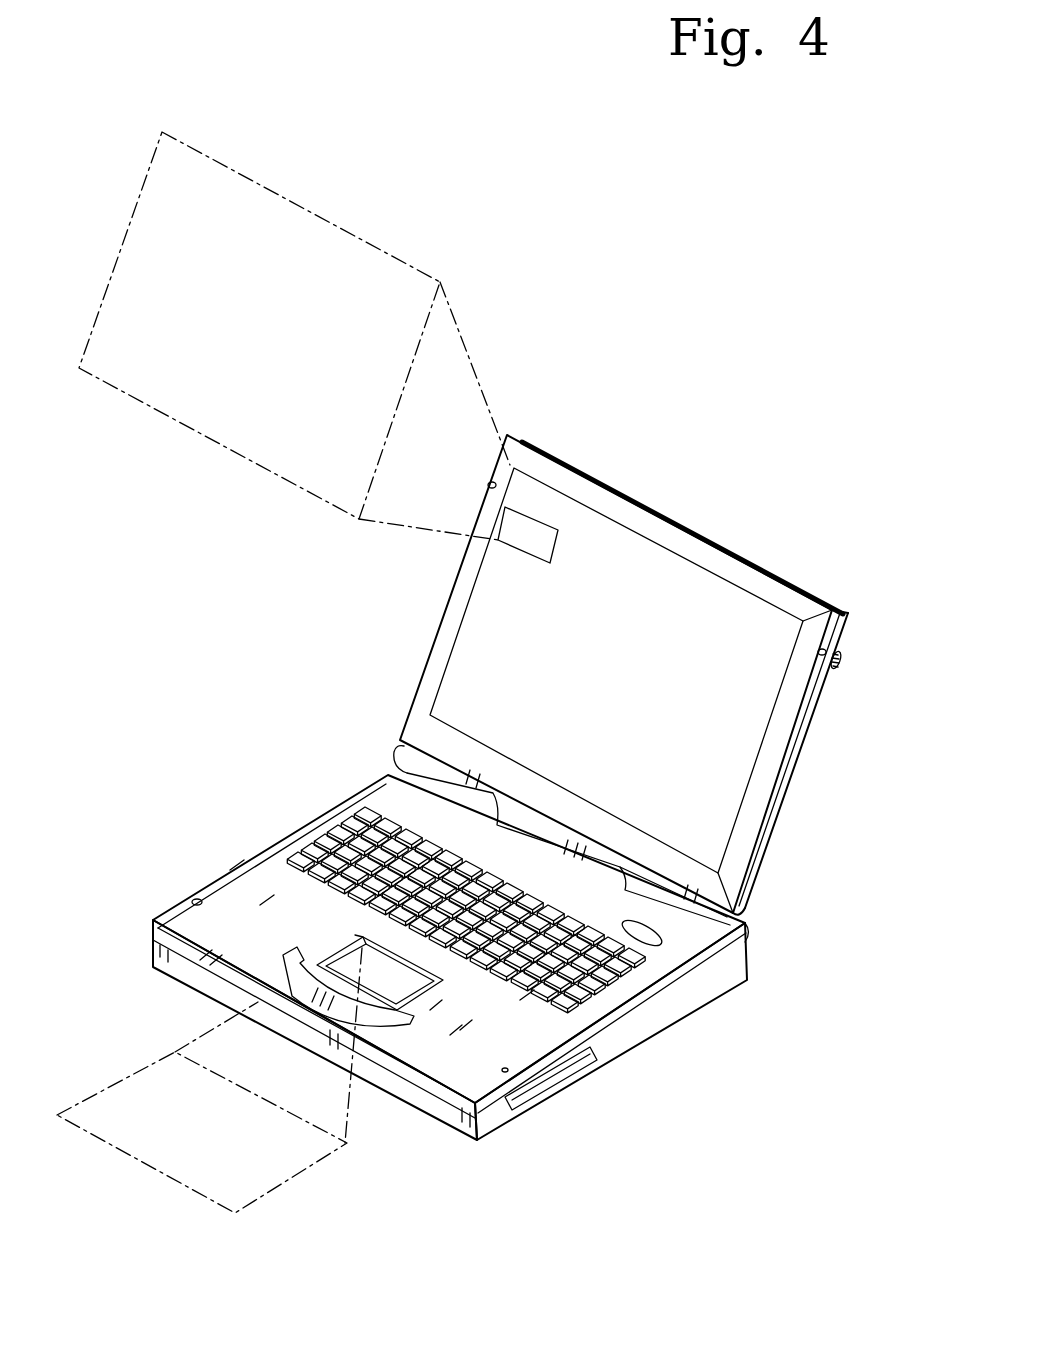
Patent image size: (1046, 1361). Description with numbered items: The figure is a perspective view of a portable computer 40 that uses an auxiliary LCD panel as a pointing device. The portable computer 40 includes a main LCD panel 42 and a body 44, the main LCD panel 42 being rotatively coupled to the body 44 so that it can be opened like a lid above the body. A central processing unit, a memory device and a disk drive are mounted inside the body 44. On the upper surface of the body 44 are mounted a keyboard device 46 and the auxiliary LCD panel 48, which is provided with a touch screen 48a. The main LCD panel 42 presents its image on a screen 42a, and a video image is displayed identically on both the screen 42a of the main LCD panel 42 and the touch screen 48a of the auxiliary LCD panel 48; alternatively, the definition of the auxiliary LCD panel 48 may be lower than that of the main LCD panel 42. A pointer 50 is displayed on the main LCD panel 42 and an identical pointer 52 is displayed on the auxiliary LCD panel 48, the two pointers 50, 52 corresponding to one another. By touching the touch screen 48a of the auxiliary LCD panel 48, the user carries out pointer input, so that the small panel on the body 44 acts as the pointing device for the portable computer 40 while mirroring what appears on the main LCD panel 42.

The portable computer 40 is at (726, 418).
The main LCD panel 42 is at (821, 742).
The screen of the main LCD panel 42a is at (720, 604).
The body 44 is at (208, 861).
The keyboard device 46 is at (317, 842).
The auxiliary LCD panel 48 is at (402, 990).
The touch screen 48a is at (284, 957).
The pointer 50 is at (320, 343).
The pointer 52 is at (246, 1148).